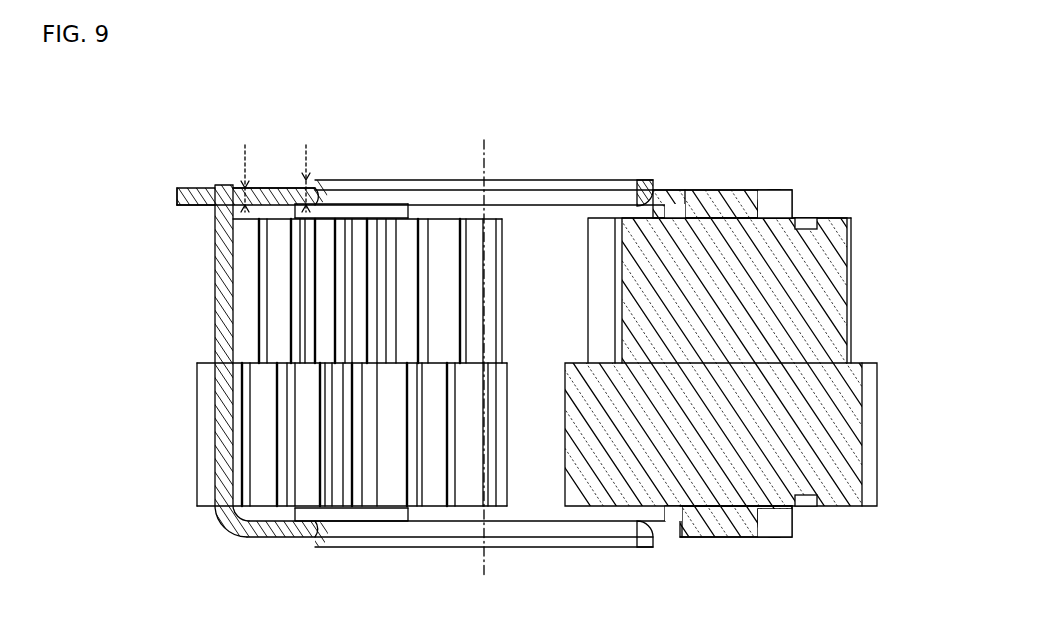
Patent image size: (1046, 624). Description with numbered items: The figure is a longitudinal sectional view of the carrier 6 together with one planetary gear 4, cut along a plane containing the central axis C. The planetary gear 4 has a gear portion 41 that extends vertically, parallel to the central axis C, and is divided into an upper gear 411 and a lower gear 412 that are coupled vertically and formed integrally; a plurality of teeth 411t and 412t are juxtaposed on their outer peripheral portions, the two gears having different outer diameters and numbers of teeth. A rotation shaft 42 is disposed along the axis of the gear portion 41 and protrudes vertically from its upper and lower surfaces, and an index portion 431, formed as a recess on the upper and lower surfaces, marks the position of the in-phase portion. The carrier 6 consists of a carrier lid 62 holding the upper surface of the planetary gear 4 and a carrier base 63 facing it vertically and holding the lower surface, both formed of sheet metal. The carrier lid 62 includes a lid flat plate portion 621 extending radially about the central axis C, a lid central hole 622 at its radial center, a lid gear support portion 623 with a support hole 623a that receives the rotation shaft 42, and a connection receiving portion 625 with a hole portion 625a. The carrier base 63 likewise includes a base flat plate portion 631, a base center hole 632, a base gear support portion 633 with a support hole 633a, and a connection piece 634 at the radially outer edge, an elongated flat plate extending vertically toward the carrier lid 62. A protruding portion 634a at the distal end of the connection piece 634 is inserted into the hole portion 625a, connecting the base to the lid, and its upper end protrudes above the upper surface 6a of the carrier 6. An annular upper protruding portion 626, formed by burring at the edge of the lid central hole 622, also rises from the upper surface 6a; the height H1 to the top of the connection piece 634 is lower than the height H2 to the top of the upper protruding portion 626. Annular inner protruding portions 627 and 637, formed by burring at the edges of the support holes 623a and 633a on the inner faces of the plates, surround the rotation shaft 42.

The planetary gear 4 is at (875, 545).
The gear portion 41 is at (892, 372).
The upper gear 411 is at (852, 282).
The teeth 411t is at (852, 312).
The lower gear 412 is at (880, 437).
The teeth 412t is at (879, 460).
The rotation shaft 42 is at (699, 189).
The index portion 431 is at (852, 224).
The carrier 6 is at (458, 140).
The upper surface 6a is at (274, 189).
The carrier lid 62 is at (440, 178).
The lid flat plate portion 621 is at (251, 187).
The lid central hole 622 is at (585, 189).
The lid gear support portion 623 is at (739, 188).
The support hole 623a is at (775, 208).
The connection receiving portion 625 is at (208, 208).
The hole portion 625a is at (203, 205).
The upper protruding portion 626 is at (644, 180).
The inner protruding portion 627 is at (365, 209).
The carrier base 63 is at (432, 552).
The base flat plate portion 631 is at (270, 542).
The base center hole 632 is at (565, 548).
The base gear support portion 633 is at (736, 540).
The support hole 633a is at (760, 535).
The connection piece 634 is at (210, 326).
The protruding portion 634a is at (215, 187).
The inner protruding portion 637 is at (350, 522).
The central axis C is at (486, 148).
The height H1 is at (232, 178).
The height H2 is at (323, 178).